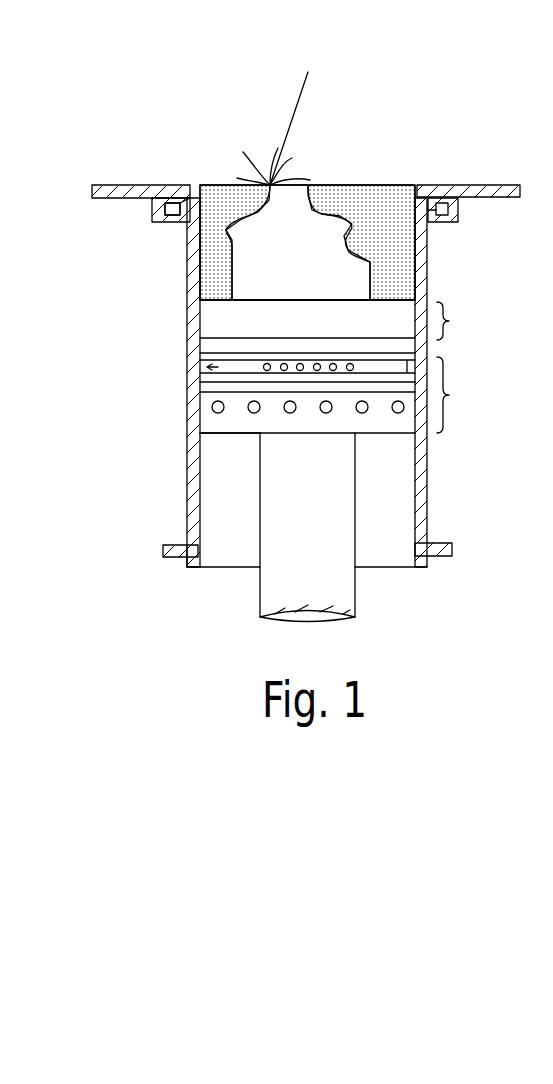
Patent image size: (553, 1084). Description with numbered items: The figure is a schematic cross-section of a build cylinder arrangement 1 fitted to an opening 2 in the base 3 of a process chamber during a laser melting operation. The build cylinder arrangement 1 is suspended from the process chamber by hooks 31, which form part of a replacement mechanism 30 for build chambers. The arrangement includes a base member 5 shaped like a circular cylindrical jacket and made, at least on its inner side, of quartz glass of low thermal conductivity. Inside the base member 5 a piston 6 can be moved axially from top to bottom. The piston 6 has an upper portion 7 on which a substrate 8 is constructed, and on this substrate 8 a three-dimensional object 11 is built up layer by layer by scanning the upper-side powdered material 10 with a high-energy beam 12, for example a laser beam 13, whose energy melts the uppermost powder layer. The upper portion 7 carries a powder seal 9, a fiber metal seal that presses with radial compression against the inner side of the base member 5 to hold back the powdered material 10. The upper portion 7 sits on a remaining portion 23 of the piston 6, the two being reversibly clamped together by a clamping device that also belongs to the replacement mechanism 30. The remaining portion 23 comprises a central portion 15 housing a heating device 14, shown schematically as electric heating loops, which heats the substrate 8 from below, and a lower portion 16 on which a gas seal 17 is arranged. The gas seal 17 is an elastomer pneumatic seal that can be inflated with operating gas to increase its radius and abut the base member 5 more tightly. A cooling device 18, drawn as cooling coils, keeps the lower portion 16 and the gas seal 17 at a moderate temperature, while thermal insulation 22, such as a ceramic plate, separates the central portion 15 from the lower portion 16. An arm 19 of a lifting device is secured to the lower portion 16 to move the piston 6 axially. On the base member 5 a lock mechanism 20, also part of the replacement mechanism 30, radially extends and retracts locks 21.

The build cylinder arrangement 1 is at (468, 427).
The opening 2 is at (340, 185).
The base 3 is at (143, 185).
The base member 5 is at (421, 237).
The piston 6 is at (240, 410).
The upper portion 7 is at (336, 324).
The substrate 8 is at (398, 310).
The powder seal 9 is at (205, 345).
The powdered material 10 is at (385, 195).
The three-dimensional object 11 is at (250, 280).
The high-energy beam 12 is at (296, 108).
The laser beam 13 is at (289, 128).
The heating device 14 is at (266, 363).
The central portion 15 is at (200, 367).
The lower portion 16 is at (253, 424).
The gas seal 17 is at (390, 385).
The cooling device 18 is at (212, 407).
The arm 19 is at (273, 578).
The lock mechanism 20 is at (181, 562).
The locks 21 is at (165, 550).
The thermal insulation 22 is at (205, 378).
The remaining portion 23 is at (464, 395).
The replacement mechanism 30 is at (153, 212).
The hooks 31 is at (170, 217).